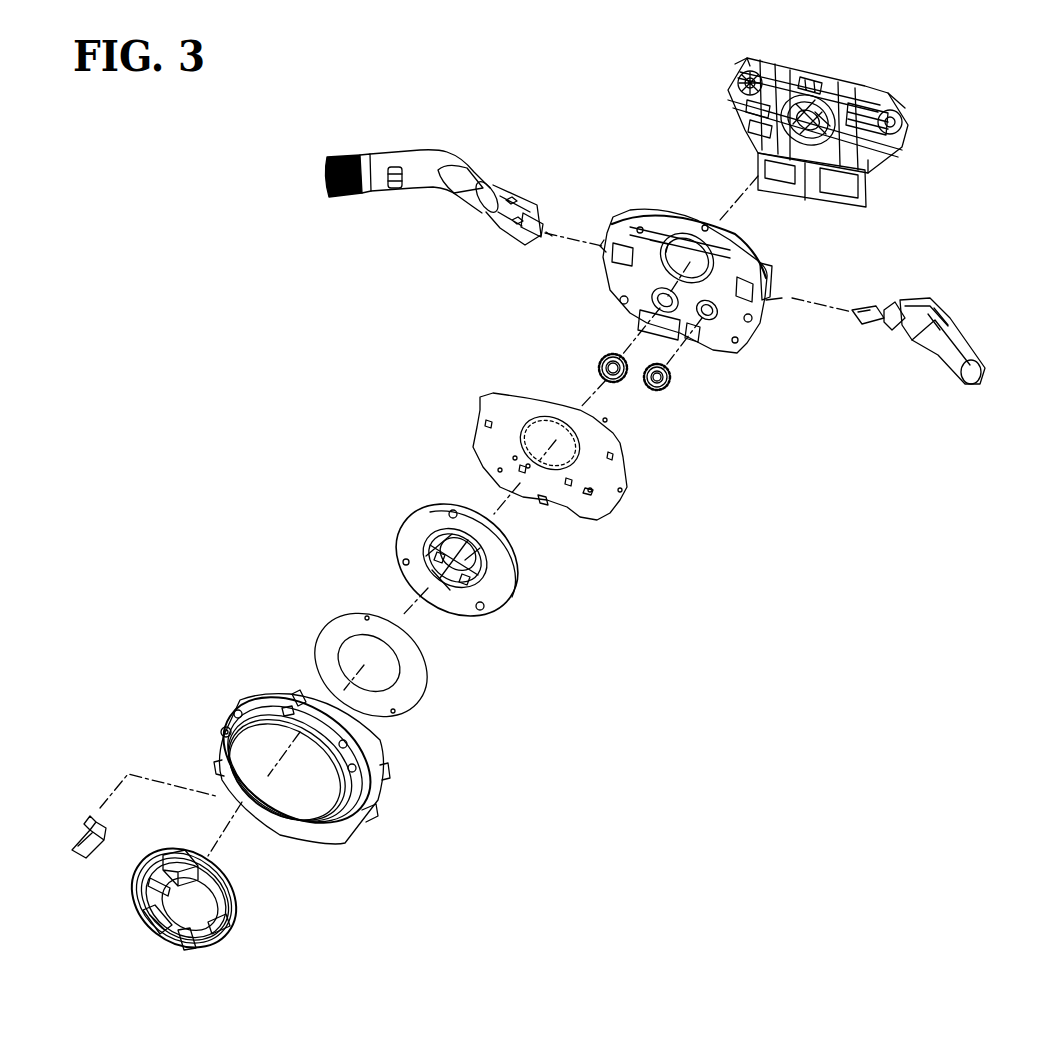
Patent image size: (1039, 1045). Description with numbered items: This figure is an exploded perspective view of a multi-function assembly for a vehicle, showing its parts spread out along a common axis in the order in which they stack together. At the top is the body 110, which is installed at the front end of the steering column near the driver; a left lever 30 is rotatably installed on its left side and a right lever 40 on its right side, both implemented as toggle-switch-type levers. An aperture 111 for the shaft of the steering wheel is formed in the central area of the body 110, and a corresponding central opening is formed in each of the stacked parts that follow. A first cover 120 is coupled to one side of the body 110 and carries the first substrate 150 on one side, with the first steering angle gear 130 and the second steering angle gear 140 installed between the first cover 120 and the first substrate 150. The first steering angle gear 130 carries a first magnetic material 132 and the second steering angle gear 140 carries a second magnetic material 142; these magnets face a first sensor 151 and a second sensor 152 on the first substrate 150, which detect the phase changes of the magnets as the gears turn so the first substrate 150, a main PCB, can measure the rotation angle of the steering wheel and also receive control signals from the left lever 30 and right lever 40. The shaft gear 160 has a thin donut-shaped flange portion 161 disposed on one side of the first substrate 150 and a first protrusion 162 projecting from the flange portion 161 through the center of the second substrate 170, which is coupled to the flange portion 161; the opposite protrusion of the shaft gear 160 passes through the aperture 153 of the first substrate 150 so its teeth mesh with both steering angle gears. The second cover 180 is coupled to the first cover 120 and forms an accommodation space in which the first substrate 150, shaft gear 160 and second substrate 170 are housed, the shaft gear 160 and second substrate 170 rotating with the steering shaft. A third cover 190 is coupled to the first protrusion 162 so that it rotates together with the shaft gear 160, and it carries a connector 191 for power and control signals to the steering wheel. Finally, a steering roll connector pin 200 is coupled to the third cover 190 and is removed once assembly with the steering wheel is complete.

The left lever 30 is at (408, 162).
The right lever 40 is at (948, 321).
The body 110 is at (846, 90).
The aperture 111 is at (792, 120).
The first cover 120 is at (736, 241).
The first steering angle gear 130 is at (606, 351).
The first magnetic material 132 is at (600, 365).
The second steering angle gear 140 is at (676, 379).
The second magnetic material 142 is at (660, 389).
The first substrate 150 is at (486, 401).
The first sensor 151 is at (526, 473).
The second sensor 152 is at (572, 481).
The aperture 153 is at (530, 437).
The shaft gear 160 is at (410, 520).
The flange portion 161 is at (488, 596).
The first protrusion 162 is at (486, 565).
The second substrate 170 is at (322, 633).
The second cover 180 is at (252, 698).
The third cover 190 is at (228, 919).
The connector 191 is at (222, 885).
The steering roll connector (SRC) pin 200 is at (76, 821).